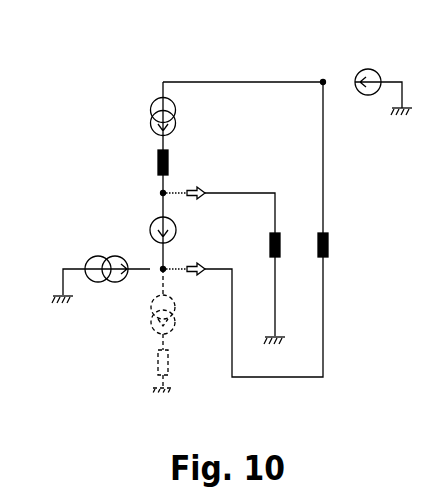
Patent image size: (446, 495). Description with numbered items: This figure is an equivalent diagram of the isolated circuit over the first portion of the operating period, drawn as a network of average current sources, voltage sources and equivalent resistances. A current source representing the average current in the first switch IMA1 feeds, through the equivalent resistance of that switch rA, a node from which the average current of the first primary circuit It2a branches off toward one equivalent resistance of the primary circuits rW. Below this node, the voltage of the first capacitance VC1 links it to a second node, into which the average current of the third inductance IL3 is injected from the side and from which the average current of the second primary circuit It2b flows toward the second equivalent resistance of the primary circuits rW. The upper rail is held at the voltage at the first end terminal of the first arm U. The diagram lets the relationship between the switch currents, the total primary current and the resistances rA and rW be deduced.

The voltage at the first end terminal of the first arm U is at (383, 79).
The average current flowing in the first switch IMA1 is at (150, 125).
The equivalent resistance of each switch rA is at (148, 160).
The average current flowing in the first primary circuit It2a is at (217, 129).
The voltage of the first capacitance VC1 is at (182, 230).
The average current flowing in the third inductance IL3 is at (106, 254).
The average current flowing in the second primary circuit It2b is at (203, 276).
The equivalent resistance of the primary circuits rW is at (299, 247).